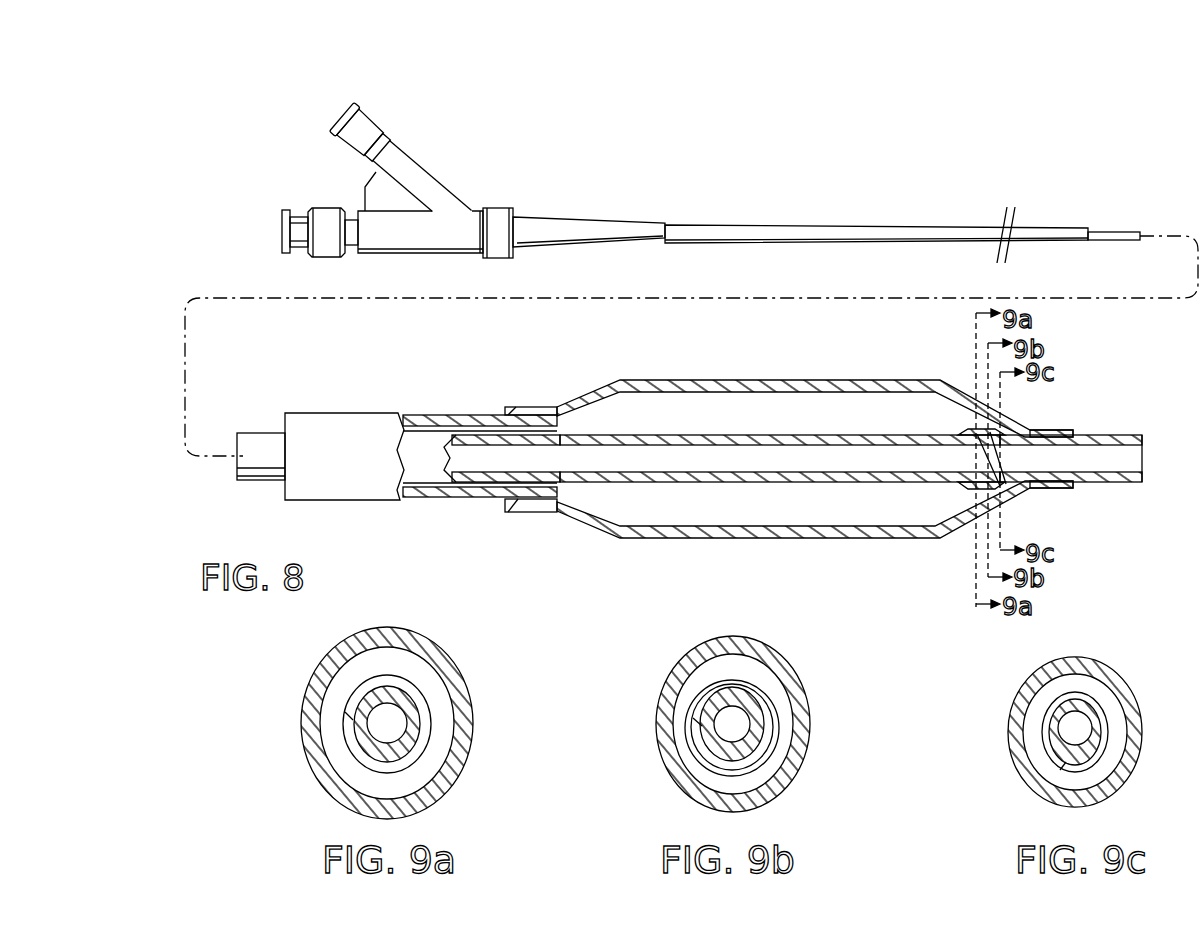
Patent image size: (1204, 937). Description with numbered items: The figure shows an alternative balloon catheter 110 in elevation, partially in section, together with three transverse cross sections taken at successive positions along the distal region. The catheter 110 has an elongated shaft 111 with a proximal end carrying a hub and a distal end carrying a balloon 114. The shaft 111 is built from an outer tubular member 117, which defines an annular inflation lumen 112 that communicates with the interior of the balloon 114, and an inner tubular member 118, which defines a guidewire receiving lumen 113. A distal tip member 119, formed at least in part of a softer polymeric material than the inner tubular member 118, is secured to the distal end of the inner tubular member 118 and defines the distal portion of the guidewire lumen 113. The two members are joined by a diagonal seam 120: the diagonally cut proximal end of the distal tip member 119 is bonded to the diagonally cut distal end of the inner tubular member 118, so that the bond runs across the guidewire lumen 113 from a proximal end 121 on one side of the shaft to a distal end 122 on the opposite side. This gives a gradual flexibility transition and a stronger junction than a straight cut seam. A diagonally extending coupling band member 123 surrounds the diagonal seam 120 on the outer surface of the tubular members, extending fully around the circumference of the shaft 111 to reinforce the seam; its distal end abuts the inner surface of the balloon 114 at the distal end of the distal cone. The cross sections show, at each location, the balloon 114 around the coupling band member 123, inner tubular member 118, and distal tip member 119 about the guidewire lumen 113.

In FIG. 8, the catheter 110 is at (624, 197).
In FIG. 8, the elongated shaft 111 is at (825, 226).
In FIG. 8, the inflation lumen 112 is at (432, 427).
In FIG. 8, the guidewire receiving lumen 113 is at (508, 455).
In FIG. 8, the balloon 114 is at (690, 381).
In FIG. 9A, the balloon 114 is at (437, 660).
In FIG. 9B, the balloon 114 is at (740, 645).
In FIG. 9C, the balloon 114 is at (1070, 662).
In FIG. 8, the outer tubular member 117 is at (445, 497).
In FIG. 8, the inner tubular member 118 is at (595, 487).
In FIG. 9A, the inner tubular member 118 is at (420, 735).
In FIG. 9B, the inner tubular member 118 is at (752, 708).
In FIG. 8, the distal tip member 119 is at (1118, 488).
In FIG. 9B, the distal tip member 119 is at (770, 768).
In FIG. 9C, the distal tip member 119 is at (1093, 710).
In FIG. 8, the diagonal seam 120 is at (1018, 438).
In FIG. 8, the proximal end of the seam 121 is at (968, 432).
In FIG. 8, the distal end of the seam 122 is at (985, 487).
In FIG. 8, the coupling band member 123 is at (980, 437).
In FIG. 9A, the coupling band member 123 is at (345, 712).
In FIG. 9B, the coupling band member 123 is at (693, 718).
In FIG. 9C, the coupling band member 123 is at (1060, 770).